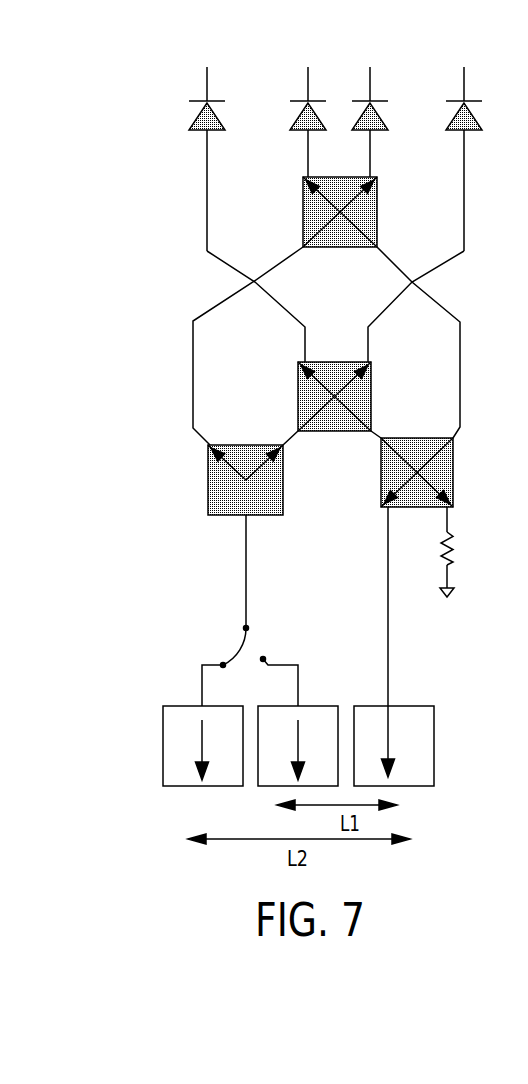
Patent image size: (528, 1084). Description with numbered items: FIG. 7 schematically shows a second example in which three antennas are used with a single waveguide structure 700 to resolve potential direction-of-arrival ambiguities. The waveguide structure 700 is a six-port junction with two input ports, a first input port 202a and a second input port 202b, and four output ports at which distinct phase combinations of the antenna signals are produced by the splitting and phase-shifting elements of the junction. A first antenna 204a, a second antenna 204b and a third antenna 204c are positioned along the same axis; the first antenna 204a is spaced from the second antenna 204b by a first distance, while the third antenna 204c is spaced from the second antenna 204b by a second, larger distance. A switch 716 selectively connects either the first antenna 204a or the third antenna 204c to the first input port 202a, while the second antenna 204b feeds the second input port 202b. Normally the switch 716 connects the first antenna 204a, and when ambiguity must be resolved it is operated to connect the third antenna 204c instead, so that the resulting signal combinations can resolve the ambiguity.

The waveguide structure 700 is at (140, 114).
The first input port 202a is at (248, 602).
The second input port 202b is at (388, 657).
The switch 716 is at (229, 628).
The first antenna 204a is at (317, 706).
The second antenna 204b is at (435, 747).
The third antenna 204c is at (175, 706).